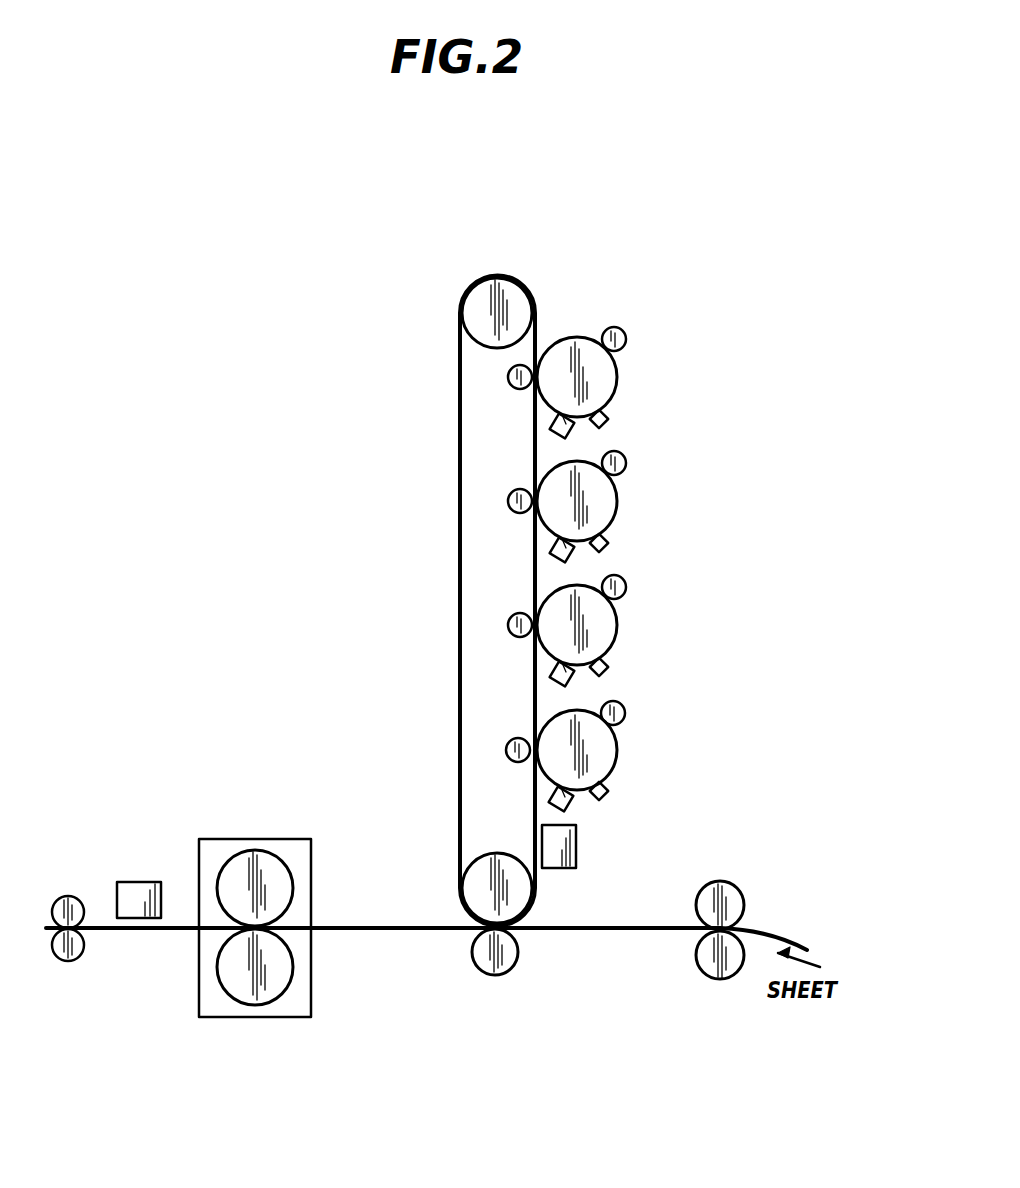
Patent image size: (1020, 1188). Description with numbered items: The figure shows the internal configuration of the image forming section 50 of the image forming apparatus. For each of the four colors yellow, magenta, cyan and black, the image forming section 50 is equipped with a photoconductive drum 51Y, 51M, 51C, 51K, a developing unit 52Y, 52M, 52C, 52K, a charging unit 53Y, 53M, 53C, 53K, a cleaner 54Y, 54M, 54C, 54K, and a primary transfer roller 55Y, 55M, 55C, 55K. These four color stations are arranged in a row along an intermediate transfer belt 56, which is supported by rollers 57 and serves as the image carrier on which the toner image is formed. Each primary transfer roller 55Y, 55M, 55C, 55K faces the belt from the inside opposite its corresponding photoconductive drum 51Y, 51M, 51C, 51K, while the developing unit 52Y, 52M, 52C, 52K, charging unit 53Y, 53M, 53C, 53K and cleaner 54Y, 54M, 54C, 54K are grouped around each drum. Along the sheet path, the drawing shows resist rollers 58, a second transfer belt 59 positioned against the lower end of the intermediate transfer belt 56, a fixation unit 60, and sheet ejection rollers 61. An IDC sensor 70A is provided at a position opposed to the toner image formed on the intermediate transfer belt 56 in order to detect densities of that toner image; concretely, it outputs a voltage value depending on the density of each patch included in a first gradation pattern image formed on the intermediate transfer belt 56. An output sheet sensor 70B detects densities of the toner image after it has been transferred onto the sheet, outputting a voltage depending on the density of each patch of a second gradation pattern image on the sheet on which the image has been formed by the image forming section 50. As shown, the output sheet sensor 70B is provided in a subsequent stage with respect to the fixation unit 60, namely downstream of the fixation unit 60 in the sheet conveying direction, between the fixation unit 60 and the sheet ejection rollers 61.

The image forming section 50 is at (721, 240).
The photoconductive drum 51Y is at (617, 373).
The photoconductive drum 51M is at (617, 497).
The photoconductive drum 51C is at (617, 621).
The photoconductive drum 51K is at (617, 745).
The developing unit 52Y is at (627, 340).
The developing unit 52M is at (627, 464).
The developing unit 52C is at (627, 588).
The developing unit 52K is at (626, 713).
The charging unit 53Y is at (607, 410).
The charging unit 53M is at (607, 534).
The charging unit 53C is at (607, 658).
The charging unit 53K is at (607, 782).
The cleaner 54Y is at (568, 437).
The cleaner 54M is at (568, 561).
The cleaner 54C is at (568, 685).
The cleaner 54K is at (567, 810).
The primary transfer roller 55Y is at (508, 378).
The primary transfer roller 55M is at (508, 502).
The primary transfer roller 55C is at (508, 626).
The primary transfer roller 55K is at (506, 751).
The intermediate transfer belt 56 is at (458, 682).
The roller 57 is at (512, 278).
The resist rollers 58 is at (746, 903).
The second transfer belt 59 is at (500, 978).
The fixation unit 60 is at (292, 838).
The sheet ejection rollers 61 is at (70, 896).
The IDC sensor 70A is at (580, 845).
The output sheet sensor 70B is at (143, 880).